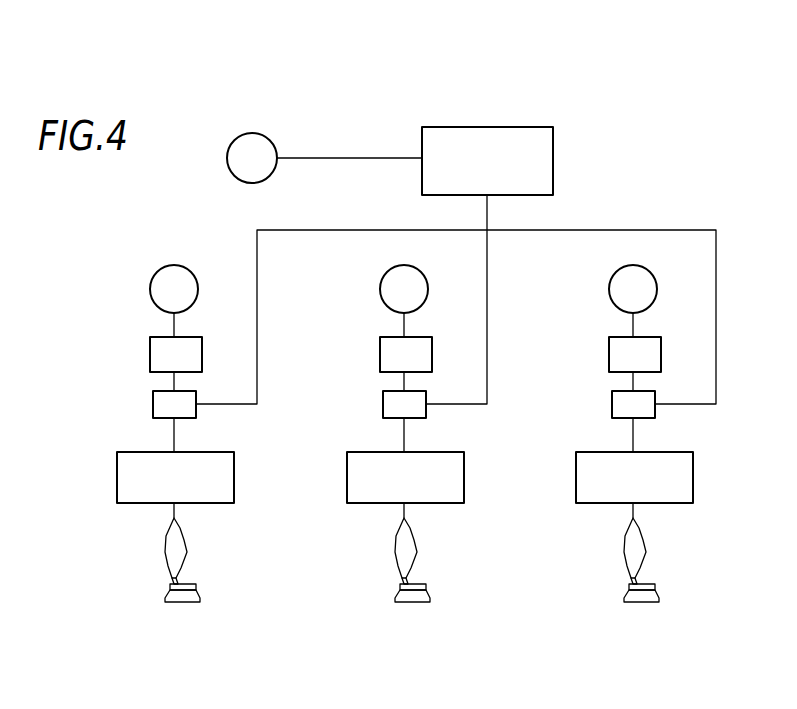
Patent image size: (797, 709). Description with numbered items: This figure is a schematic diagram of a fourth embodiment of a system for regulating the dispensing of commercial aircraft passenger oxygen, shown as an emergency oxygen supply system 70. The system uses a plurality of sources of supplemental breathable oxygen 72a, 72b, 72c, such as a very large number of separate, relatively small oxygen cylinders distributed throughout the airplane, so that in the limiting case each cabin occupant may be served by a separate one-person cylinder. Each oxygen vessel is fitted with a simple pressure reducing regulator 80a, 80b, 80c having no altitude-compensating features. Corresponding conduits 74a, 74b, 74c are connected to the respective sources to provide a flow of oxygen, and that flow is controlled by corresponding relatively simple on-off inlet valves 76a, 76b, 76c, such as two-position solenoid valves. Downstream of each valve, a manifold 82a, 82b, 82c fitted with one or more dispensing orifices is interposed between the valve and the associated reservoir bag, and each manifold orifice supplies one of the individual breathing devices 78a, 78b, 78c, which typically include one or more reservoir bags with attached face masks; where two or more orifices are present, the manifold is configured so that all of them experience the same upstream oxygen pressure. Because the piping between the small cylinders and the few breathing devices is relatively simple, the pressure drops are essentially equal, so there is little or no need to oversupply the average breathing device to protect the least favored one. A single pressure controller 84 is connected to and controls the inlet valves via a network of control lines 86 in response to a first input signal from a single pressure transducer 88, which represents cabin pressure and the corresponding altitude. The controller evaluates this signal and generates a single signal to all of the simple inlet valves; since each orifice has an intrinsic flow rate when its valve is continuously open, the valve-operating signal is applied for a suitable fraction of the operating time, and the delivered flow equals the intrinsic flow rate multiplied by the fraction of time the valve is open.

The emergency oxygen supply system 70 is at (620, 107).
The source of supplemental breathable oxygen 72a is at (164, 270).
The source of supplemental breathable oxygen 72b is at (394, 270).
The source of supplemental breathable oxygen 72c is at (623, 270).
The conduit 74a is at (174, 323).
The conduit 74b is at (404, 323).
The conduit 74c is at (633, 323).
The on-off inlet valve 76a is at (153, 405).
The on-off inlet valve 76b is at (383, 405).
The on-off inlet valve 76c is at (612, 405).
The individual breathing device 78a is at (148, 594).
The individual breathing device 78b is at (378, 594).
The individual breathing device 78c is at (607, 594).
The pressure reducing regulator 80a is at (150, 352).
The pressure reducing regulator 80b is at (380, 352).
The pressure reducing regulator 80c is at (609, 352).
The manifold 82a is at (117, 480).
The manifold 82b is at (347, 480).
The manifold 82c is at (576, 480).
The pressure controller 84 is at (474, 127).
The network of control lines 86 is at (338, 230).
The pressure transducer 88 is at (228, 157).